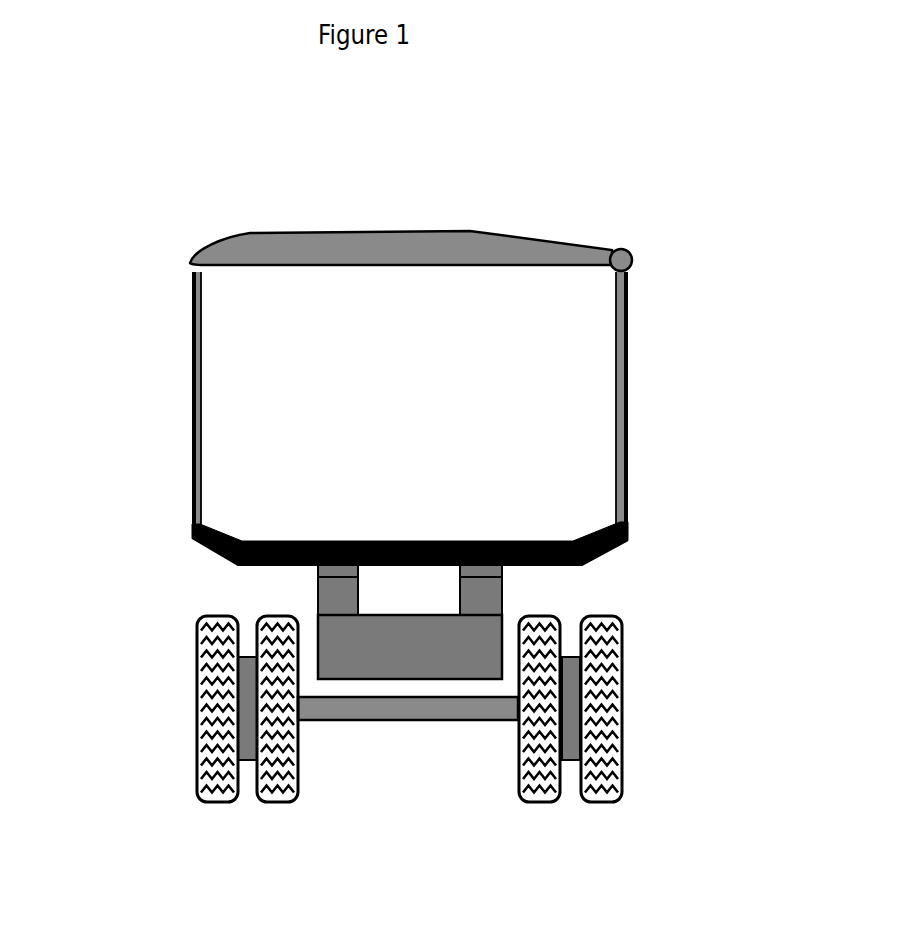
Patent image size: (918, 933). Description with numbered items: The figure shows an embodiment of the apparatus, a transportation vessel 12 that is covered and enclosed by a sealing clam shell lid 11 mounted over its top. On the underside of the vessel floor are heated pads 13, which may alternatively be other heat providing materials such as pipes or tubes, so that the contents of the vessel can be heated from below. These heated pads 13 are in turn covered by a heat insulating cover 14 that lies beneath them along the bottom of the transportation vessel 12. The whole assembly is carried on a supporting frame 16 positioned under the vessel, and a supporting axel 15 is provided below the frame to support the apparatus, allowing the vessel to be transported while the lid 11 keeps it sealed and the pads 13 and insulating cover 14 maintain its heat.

The sealing clam shell lid 11 is at (222, 243).
The transportation vessel 12 is at (238, 350).
The heated pads 13 is at (383, 541).
The heat insulating cover 14 is at (208, 552).
The supporting axel 15 is at (432, 722).
The supporting frame 16 is at (503, 595).